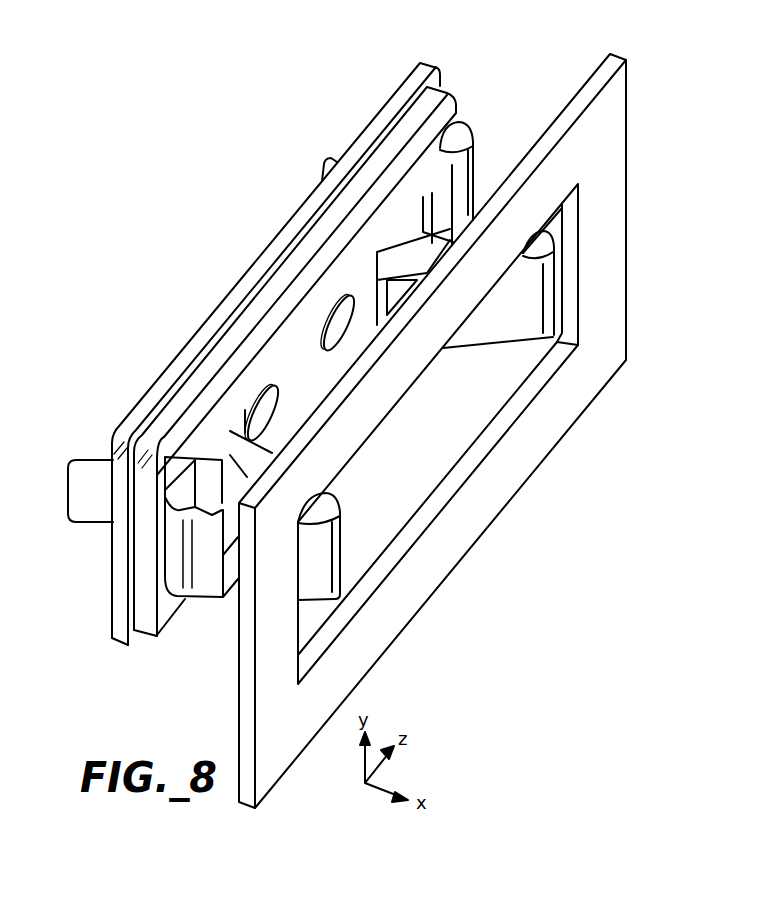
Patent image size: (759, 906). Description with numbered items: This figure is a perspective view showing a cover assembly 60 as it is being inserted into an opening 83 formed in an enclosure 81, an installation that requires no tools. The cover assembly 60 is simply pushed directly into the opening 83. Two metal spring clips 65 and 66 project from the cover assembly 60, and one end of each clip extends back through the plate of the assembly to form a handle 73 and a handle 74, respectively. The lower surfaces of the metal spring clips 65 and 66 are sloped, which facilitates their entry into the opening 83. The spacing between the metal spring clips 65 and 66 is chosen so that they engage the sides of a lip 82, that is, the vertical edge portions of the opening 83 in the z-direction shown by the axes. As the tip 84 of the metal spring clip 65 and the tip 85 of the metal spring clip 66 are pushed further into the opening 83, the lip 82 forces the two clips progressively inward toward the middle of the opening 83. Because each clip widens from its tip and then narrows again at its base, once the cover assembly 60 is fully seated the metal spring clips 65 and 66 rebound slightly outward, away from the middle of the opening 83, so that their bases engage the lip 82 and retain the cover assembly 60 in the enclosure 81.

The cover assembly 60 is at (186, 242).
The metal spring clip 65 is at (227, 588).
The metal spring clip 66 is at (480, 172).
The handle 73 is at (78, 478).
The handle 74 is at (324, 176).
The enclosure 81 is at (605, 115).
The lip 82 is at (572, 287).
The opening 83 is at (413, 493).
The tip 84 is at (343, 597).
The tip 85 is at (547, 343).